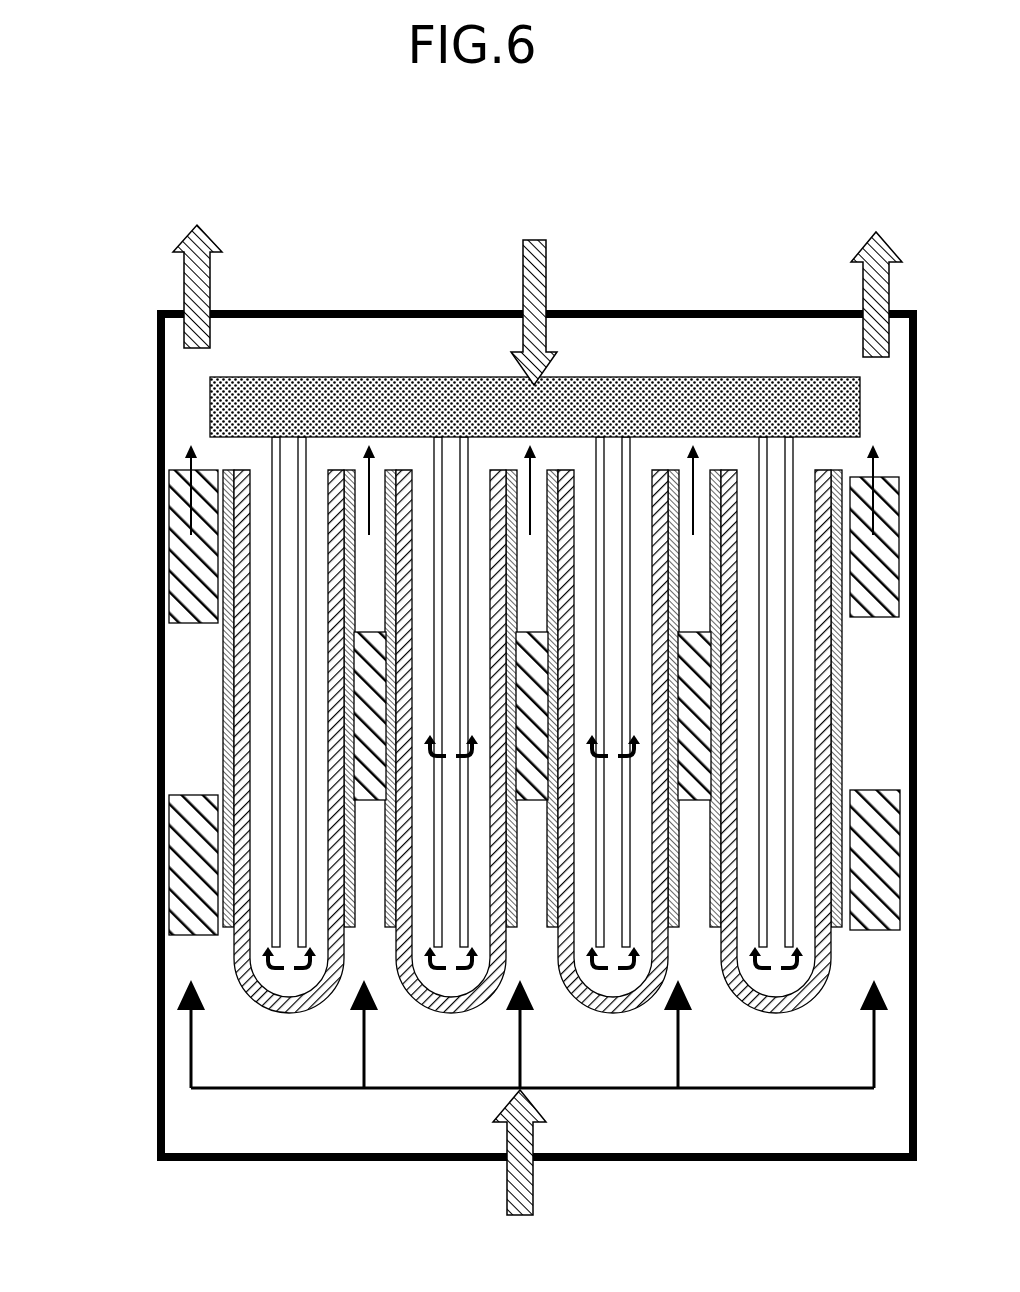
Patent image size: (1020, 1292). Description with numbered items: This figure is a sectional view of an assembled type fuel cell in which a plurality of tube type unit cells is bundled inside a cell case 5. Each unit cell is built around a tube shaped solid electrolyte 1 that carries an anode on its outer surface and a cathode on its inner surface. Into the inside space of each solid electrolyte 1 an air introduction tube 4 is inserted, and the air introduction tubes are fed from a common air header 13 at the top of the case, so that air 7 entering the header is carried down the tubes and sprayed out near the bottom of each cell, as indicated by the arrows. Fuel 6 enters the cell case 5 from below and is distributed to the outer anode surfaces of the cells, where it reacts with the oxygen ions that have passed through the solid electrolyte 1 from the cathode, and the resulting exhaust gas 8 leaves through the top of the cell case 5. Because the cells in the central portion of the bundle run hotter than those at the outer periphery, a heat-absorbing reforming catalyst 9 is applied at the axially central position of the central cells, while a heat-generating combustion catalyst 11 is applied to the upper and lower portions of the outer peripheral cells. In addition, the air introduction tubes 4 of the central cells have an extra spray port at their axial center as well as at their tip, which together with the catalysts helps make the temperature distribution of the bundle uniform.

The solid electrolyte 1 is at (235, 651).
The air introduction tube 4 is at (280, 937).
The cell case 5 is at (157, 1114).
The fuel 6 is at (519, 1172).
The air 7 is at (534, 292).
The exhaust gas 8 is at (537, 273).
The reforming catalyst 9 is at (355, 714).
The combustion catalyst 11 is at (175, 566).
The air header 13 is at (233, 405).